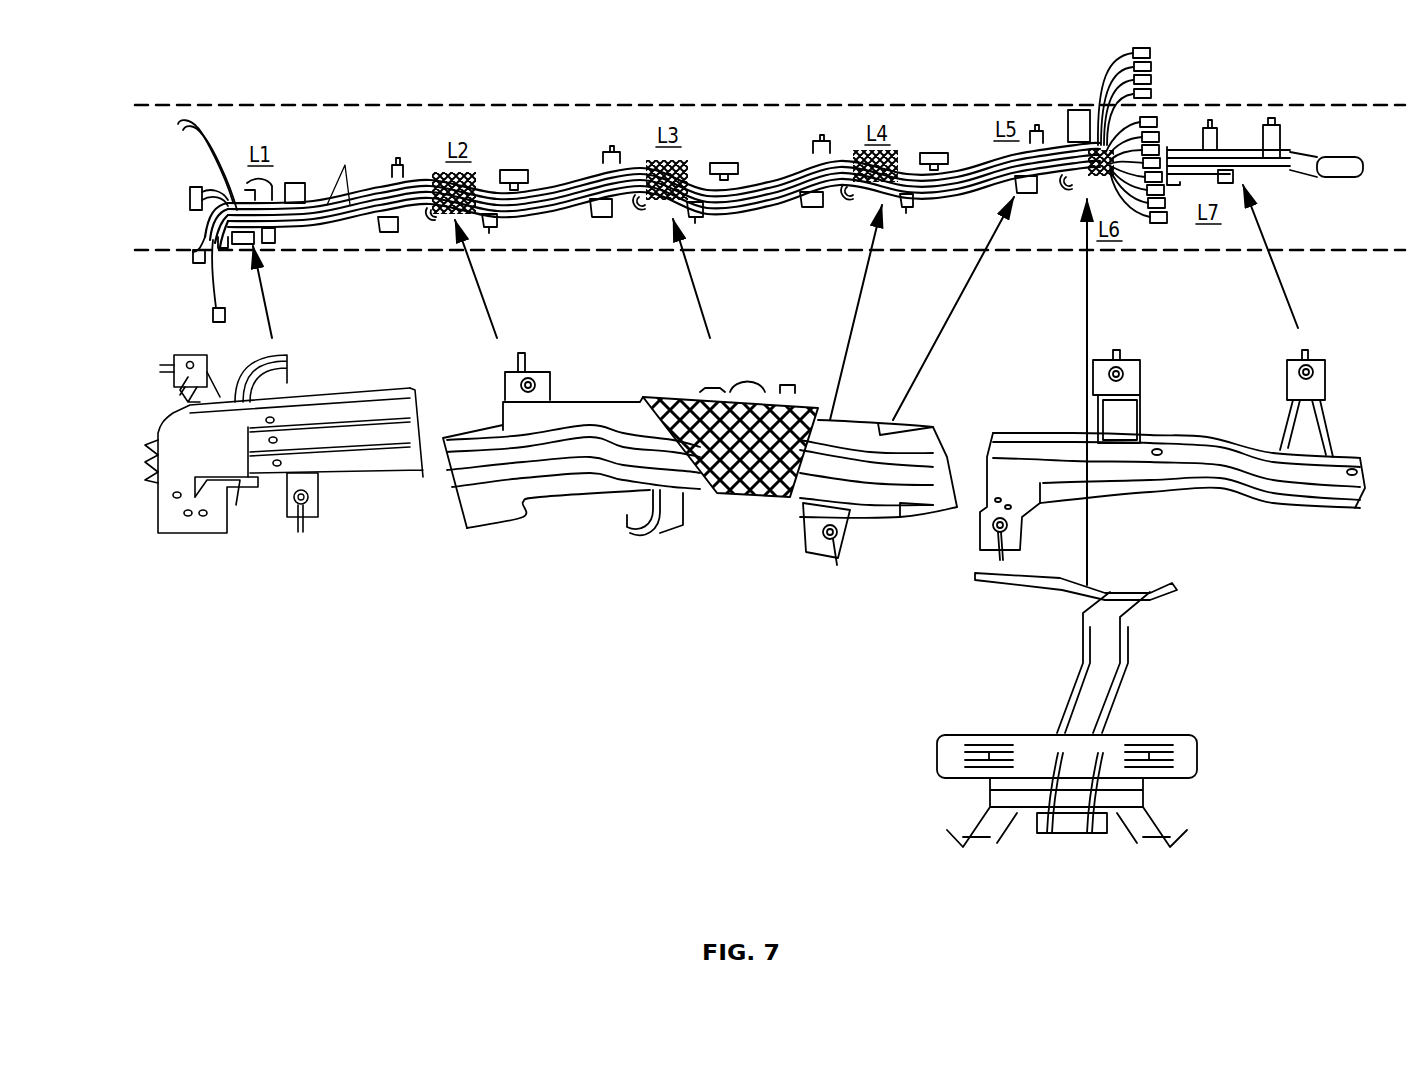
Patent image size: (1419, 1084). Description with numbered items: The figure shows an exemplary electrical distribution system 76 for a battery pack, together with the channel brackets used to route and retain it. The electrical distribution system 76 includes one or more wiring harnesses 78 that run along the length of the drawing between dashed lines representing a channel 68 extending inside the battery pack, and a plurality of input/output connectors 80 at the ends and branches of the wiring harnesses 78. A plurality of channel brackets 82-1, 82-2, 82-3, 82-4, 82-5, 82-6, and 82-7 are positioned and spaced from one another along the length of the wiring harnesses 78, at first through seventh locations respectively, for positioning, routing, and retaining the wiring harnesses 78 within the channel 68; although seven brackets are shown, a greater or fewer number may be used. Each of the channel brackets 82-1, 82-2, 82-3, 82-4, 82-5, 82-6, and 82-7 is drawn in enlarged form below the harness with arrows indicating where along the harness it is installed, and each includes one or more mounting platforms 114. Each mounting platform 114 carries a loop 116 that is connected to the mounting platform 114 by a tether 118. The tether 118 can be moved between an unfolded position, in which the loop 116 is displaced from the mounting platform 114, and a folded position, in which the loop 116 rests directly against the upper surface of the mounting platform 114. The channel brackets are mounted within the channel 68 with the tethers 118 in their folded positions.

The channel 68 is at (972, 105).
The electrical distribution system 76 is at (150, 146).
The wiring harness 78 is at (341, 173).
The input/output connector 80 is at (175, 123).
The channel bracket 82-1 is at (236, 556).
The channel bracket 82-2 is at (700, 490).
The channel bracket 82-3 is at (700, 490).
The channel bracket 82-4 is at (700, 490).
The channel bracket 82-5 is at (726, 527).
The channel bracket 82-6 is at (1082, 851).
The channel bracket 82-7 is at (1257, 498).
The mounting platform 114 is at (322, 490).
The loop 116 is at (310, 500).
The tether 118 is at (300, 532).